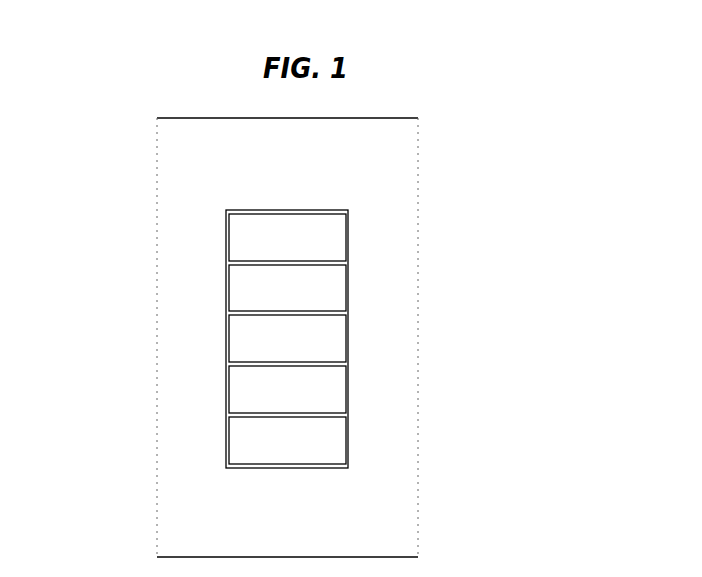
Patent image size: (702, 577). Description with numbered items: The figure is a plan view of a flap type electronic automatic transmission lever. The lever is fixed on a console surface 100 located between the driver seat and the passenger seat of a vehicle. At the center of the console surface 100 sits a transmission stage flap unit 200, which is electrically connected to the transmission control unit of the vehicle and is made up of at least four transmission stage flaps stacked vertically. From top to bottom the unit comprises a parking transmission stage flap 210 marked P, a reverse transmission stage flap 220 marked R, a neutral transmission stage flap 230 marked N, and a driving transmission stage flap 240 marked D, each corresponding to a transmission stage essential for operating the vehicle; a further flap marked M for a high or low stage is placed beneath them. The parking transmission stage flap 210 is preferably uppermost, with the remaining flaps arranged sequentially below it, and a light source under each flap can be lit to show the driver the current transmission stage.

The console surface 100 is at (380, 168).
The transmission stage flap unit 200 is at (275, 339).
The parking transmission stage flap 210 is at (245, 238).
The reverse transmission stage flap 220 is at (245, 290).
The neutral transmission stage flap 230 is at (245, 341).
The driving transmission stage flap 240 is at (245, 392).